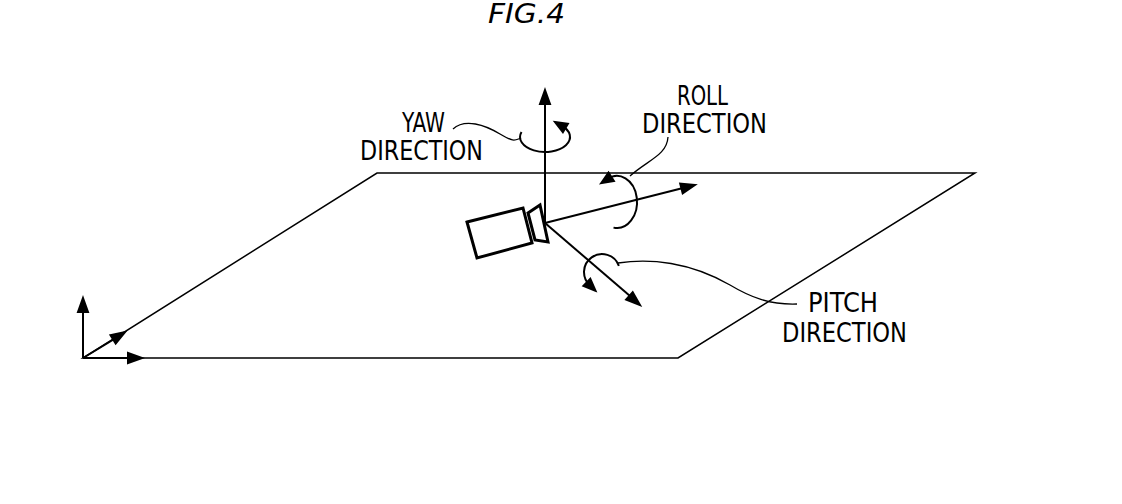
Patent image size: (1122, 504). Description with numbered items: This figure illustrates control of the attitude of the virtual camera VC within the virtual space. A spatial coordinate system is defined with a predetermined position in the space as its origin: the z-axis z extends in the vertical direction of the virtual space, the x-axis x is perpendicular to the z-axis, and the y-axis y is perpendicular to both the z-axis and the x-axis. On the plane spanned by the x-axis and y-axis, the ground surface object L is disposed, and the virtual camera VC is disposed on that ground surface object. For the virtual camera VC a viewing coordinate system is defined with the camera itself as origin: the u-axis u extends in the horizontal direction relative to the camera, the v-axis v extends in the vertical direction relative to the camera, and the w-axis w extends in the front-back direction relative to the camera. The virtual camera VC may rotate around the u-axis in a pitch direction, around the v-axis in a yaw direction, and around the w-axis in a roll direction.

The virtual camera VC is at (467, 223).
The ground surface object L is at (847, 174).
The u-axis u is at (601, 278).
The v-axis v is at (545, 142).
The w-axis w is at (633, 202).
The x-axis x is at (125, 371).
The y-axis y is at (105, 326).
The z-axis z is at (80, 312).